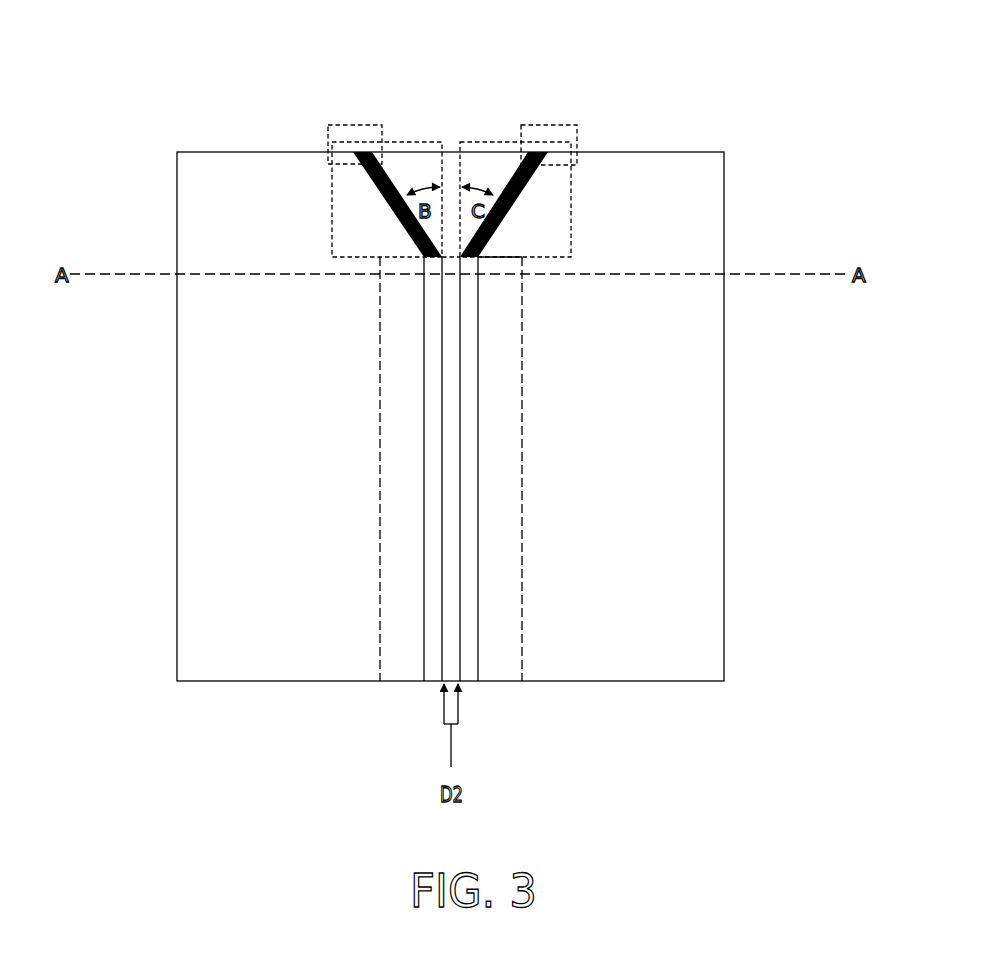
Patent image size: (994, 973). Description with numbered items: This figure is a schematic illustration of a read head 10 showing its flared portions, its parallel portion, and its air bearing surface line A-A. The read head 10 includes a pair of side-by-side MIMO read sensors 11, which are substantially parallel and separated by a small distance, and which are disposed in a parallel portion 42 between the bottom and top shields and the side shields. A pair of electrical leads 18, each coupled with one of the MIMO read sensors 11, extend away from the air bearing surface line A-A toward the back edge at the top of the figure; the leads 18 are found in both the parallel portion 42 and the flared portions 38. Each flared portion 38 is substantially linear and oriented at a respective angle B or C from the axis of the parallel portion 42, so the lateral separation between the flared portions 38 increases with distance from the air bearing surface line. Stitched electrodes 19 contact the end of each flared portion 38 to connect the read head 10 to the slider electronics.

The read head 10 is at (420, 34).
The MIMO read sensors 11 is at (423, 392).
The electrical leads 18 is at (418, 250).
The electrodes 19 is at (327, 128).
The flared portions 38 is at (417, 142).
The parallel portion 42 is at (378, 653).